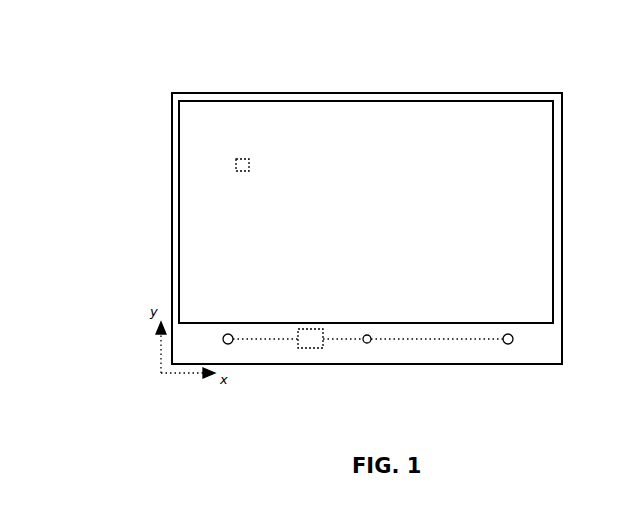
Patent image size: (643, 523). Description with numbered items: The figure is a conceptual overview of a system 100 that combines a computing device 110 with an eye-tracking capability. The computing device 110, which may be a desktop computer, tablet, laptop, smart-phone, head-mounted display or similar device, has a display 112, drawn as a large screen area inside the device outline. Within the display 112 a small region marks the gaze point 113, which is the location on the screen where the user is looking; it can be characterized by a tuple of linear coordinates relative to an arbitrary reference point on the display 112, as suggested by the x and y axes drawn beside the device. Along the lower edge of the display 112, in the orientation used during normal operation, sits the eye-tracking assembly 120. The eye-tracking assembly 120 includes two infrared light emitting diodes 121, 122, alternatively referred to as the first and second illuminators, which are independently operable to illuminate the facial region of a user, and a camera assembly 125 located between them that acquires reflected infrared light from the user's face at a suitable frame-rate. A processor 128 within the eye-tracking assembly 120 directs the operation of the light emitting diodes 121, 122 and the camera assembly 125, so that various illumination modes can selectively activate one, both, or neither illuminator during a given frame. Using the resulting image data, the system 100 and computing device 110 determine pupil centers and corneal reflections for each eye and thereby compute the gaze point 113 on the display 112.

The system 100 is at (137, 88).
The computing device 110 is at (170, 237).
The display 112 is at (534, 168).
The gaze point 113 is at (250, 162).
The eye-tracking assembly 120 is at (435, 350).
The light emitting diode 121 is at (233, 333).
The light emitting diode 122 is at (507, 333).
The camera assembly 125 is at (367, 334).
The processor 128 is at (300, 343).